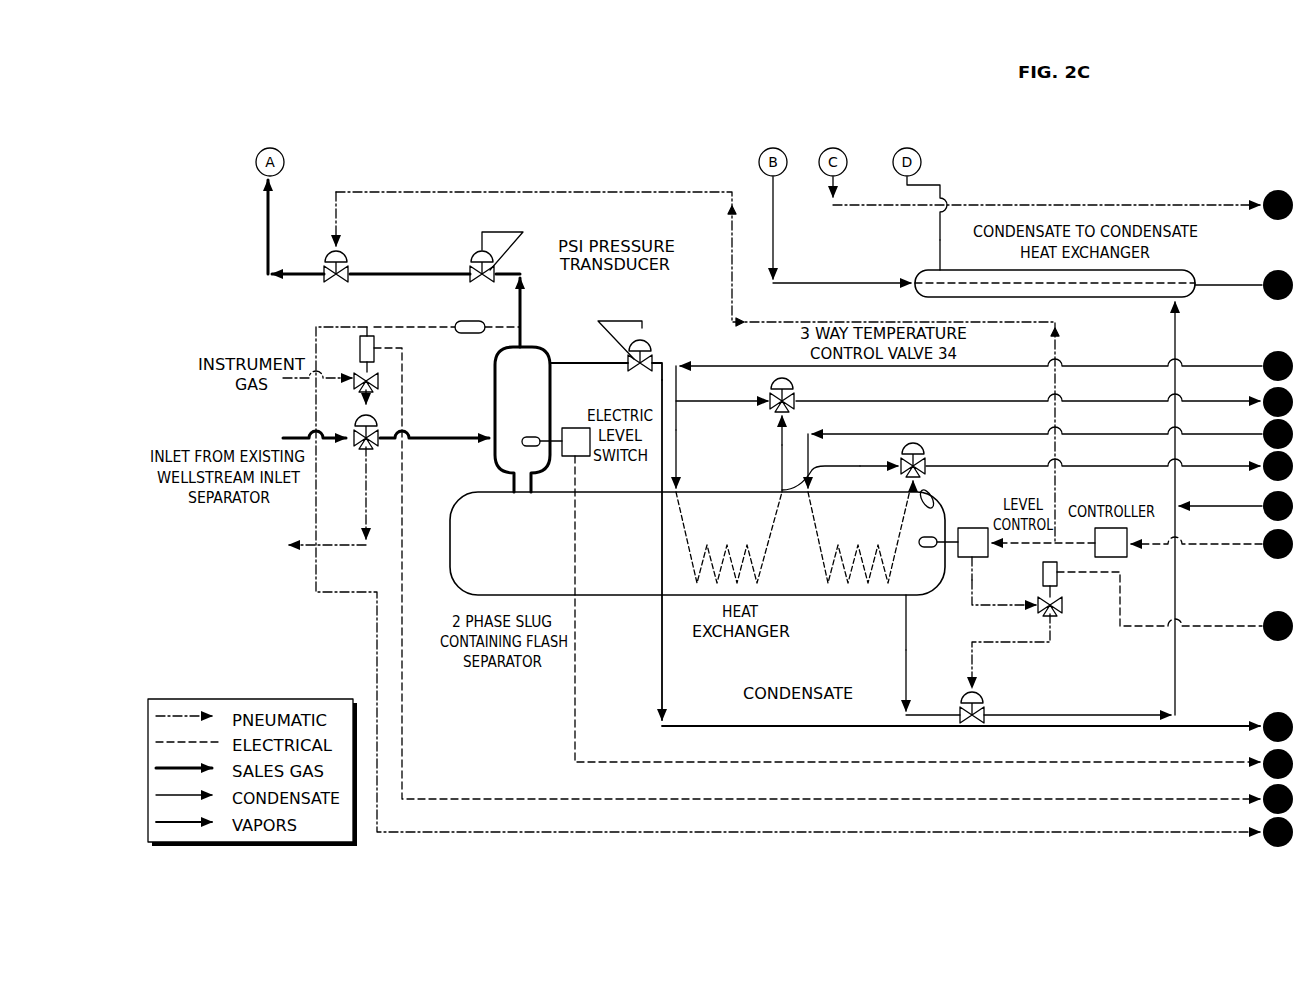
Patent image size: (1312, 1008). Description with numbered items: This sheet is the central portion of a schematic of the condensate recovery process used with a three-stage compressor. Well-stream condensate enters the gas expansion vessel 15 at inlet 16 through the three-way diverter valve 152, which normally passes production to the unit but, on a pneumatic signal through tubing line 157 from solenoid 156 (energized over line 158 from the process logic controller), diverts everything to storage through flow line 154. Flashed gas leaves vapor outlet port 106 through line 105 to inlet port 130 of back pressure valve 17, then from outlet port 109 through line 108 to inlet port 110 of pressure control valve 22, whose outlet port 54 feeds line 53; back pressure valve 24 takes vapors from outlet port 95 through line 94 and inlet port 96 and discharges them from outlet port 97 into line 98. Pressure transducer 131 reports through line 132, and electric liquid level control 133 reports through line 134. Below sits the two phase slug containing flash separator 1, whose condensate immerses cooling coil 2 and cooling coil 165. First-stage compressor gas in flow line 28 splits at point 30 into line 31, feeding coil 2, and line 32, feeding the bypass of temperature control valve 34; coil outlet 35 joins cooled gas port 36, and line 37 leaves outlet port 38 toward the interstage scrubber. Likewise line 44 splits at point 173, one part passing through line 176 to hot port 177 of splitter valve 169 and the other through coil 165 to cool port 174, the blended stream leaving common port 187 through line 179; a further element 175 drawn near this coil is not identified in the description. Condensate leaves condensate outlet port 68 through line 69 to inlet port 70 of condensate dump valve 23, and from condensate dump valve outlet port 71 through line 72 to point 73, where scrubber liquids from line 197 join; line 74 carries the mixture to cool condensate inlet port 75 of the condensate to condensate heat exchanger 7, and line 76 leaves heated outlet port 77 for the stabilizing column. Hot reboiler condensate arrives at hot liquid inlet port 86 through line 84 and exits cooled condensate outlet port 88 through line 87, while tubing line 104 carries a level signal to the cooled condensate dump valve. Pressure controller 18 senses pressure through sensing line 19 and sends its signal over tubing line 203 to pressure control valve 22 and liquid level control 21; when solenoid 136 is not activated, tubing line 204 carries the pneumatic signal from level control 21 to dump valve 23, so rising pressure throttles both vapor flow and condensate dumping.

The flash separator vessel 1 is at (452, 520).
The cooling coil 2 is at (770, 545).
The condensate to condensate heat exchanger 7 is at (1100, 299).
The gas expansion vessel 15 is at (496, 394).
The inlet 16 is at (496, 438).
The back pressure valve 17 is at (475, 250).
The pressure controller 18 is at (1118, 558).
The sensing line 19 is at (1190, 546).
The liquid level control 21 is at (978, 568).
The pressure control valve 22 is at (341, 252).
The condensate dump valve 23 is at (978, 692).
The back pressure valve 24 is at (652, 326).
The flow line 28 is at (756, 364).
The point 30 is at (680, 400).
The line 31 is at (678, 452).
The line 32 is at (728, 400).
The temperature control valve 34 is at (794, 390).
The outlet 35 is at (780, 440).
The cooled gas port 36 is at (780, 416).
The line 37 is at (976, 400).
The outlet port 38 is at (794, 404).
The line 44 is at (884, 434).
The line 53 is at (268, 228).
The outlet port 54 is at (326, 272).
The condensate outlet port 68 is at (915, 598).
The line 69 is at (908, 640).
The inlet port 70 is at (958, 712).
The condensate dump valve outlet port 71 is at (986, 714).
The line 72 is at (1178, 588).
The point 73 is at (1178, 504).
The line 74 is at (1178, 378).
The cool condensate inlet port 75 is at (1180, 300).
The line 76 is at (938, 244).
The heated outlet port 77 is at (938, 270).
The line 84 is at (776, 258).
The hot liquid inlet port 86 is at (915, 284).
The line 87 is at (1220, 287).
The cooled condensate outlet port 88 is at (1198, 282).
The line 94 is at (590, 364).
The outlet port 95 is at (552, 360).
The inlet port 96 is at (630, 365).
The outlet port 97 is at (650, 364).
The line 98 is at (678, 396).
The tubing line 104 is at (832, 186).
The line 105 is at (522, 322).
The vapor outlet port 106 is at (522, 345).
The line 108 is at (410, 276).
The outlet port 109 is at (472, 272).
The inlet port 110 is at (350, 272).
The inlet port 130 is at (498, 272).
The pressure transducer 131 is at (468, 321).
The line 132 is at (316, 342).
The electric liquid level control 133 is at (574, 458).
The line 134 is at (577, 700).
The solenoid 136 is at (1058, 575).
The three-way diverter valve 152 is at (363, 450).
The flow line 154 is at (348, 547).
The solenoid 156 is at (364, 334).
The tubing line 157 is at (360, 394).
The line 158 is at (404, 688).
The cooling coil 165 is at (896, 556).
The splitter valve 169 is at (922, 458).
The point 173 is at (788, 480).
The cool port 174 is at (910, 488).
The temperature sensor 175 is at (940, 502).
The line 176 is at (822, 466).
The hot port 177 is at (900, 470).
The line 179 is at (1088, 466).
The common port 187 is at (926, 472).
The line 197 is at (1184, 512).
The tubing line 203 is at (614, 190).
The tubing line 204 is at (1018, 607).